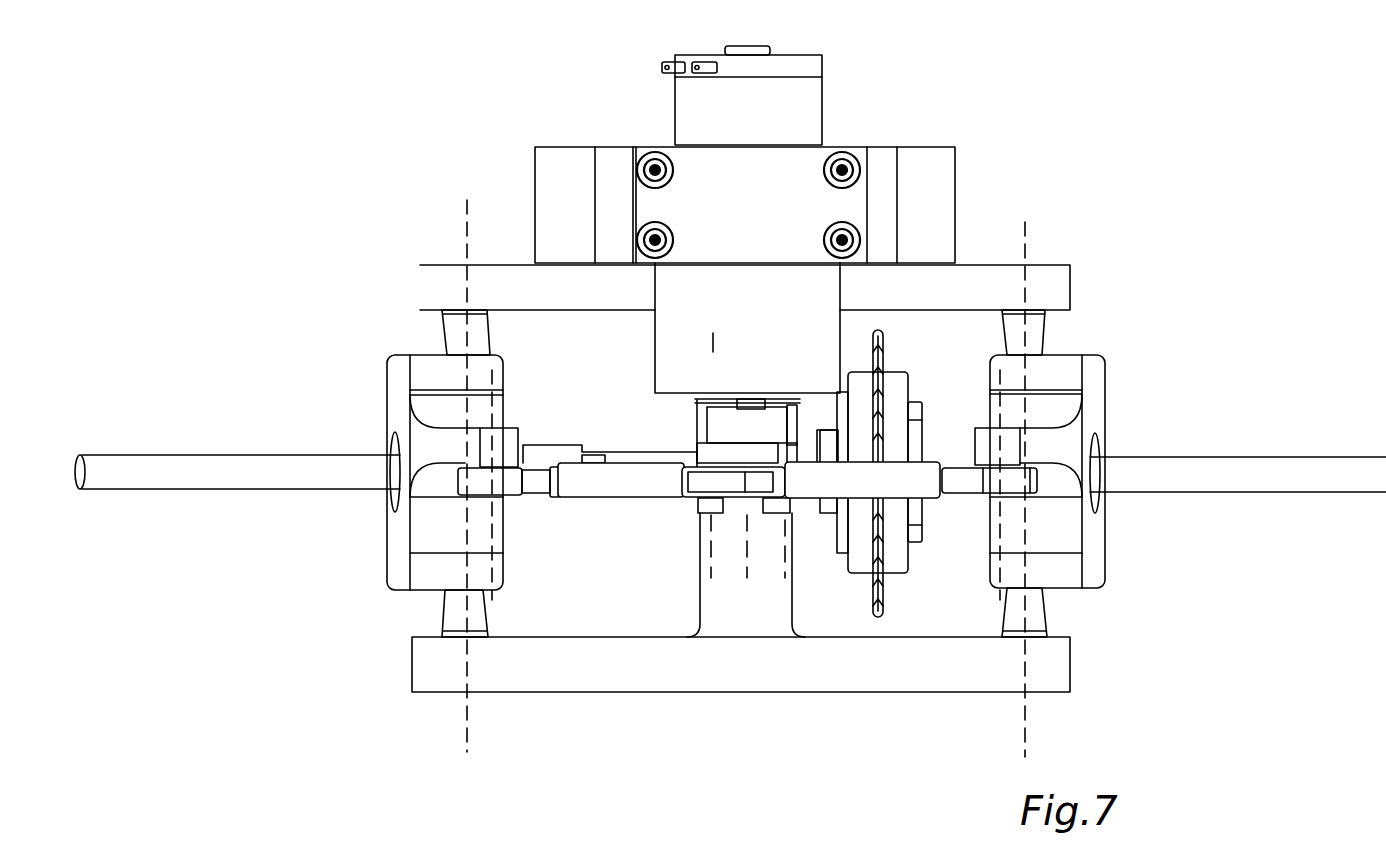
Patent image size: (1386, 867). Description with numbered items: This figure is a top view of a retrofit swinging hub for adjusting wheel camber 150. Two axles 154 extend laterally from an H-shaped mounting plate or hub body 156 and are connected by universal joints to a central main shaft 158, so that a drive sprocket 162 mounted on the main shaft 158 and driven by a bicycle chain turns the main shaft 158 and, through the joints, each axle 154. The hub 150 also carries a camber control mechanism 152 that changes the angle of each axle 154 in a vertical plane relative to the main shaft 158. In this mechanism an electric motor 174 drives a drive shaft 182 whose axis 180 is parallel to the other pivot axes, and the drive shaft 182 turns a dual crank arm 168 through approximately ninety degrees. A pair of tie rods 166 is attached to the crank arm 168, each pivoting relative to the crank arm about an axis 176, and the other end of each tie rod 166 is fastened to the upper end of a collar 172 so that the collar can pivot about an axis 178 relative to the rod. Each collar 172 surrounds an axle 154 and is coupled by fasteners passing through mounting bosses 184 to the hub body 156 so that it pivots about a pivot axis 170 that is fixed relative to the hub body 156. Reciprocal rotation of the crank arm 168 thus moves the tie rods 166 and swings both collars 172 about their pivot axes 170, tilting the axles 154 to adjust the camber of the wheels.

The swinging hub 150 is at (1024, 50).
The camber control mechanism 152 is at (620, 366).
The axle 154 is at (222, 490).
The H-shaped mounting plate 156 is at (533, 680).
The main shaft 158 is at (635, 455).
The drive sprocket 162 is at (880, 614).
The tie rod 166 is at (596, 499).
The dual crank arm 168 is at (765, 412).
The pivot axis 170 is at (458, 748).
The collar 172 is at (390, 568).
The electric motor 174 is at (822, 105).
The axis 176 is at (815, 603).
The axis 178 is at (493, 591).
The axis of the drive shaft 180 is at (747, 578).
The drive shaft 182 is at (748, 457).
The mounting boss 184 is at (440, 340).